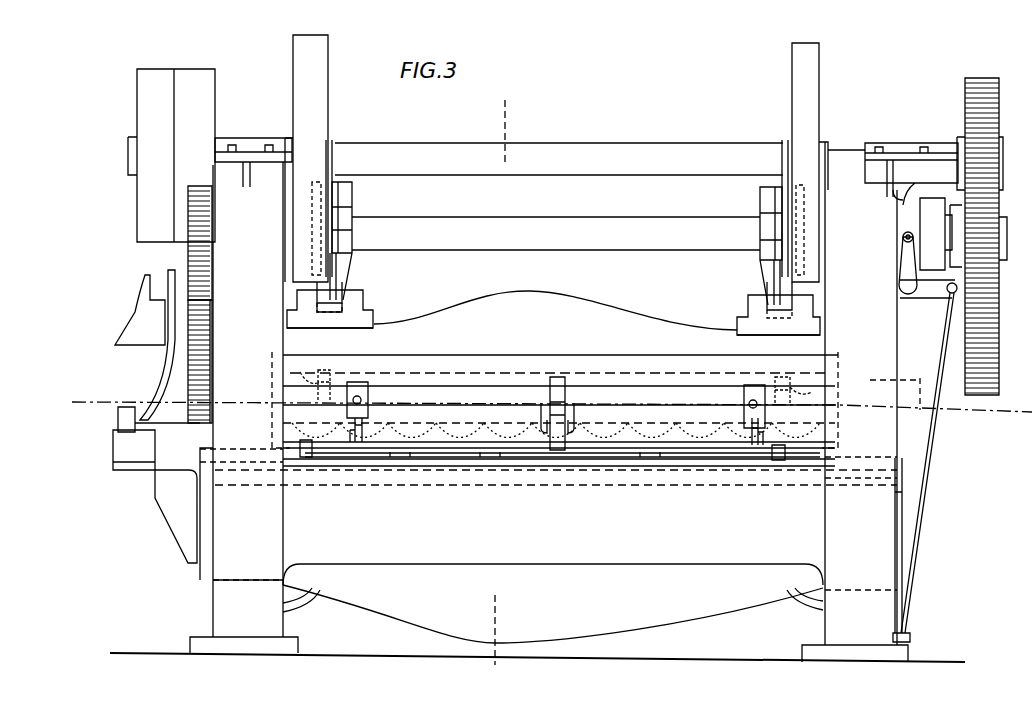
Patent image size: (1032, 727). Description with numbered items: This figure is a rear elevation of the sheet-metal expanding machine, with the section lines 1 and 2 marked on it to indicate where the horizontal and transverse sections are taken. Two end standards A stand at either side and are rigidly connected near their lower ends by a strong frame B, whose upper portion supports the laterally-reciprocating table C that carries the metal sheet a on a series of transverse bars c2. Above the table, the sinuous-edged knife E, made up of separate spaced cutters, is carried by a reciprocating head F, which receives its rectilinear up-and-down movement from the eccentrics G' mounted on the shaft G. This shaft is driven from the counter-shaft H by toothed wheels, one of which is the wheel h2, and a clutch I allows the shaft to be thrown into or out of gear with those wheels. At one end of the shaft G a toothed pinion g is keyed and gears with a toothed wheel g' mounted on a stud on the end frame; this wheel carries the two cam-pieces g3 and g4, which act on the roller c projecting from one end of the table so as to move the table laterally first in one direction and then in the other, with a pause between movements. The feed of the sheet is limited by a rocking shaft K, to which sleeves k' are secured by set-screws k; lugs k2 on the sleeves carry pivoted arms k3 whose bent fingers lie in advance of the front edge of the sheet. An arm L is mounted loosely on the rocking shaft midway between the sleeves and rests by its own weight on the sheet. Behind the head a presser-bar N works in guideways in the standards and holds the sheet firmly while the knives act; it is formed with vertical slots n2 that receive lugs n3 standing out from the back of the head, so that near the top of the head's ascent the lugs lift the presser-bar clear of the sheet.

The end standard A is at (549, 402).
The frame B is at (553, 574).
The laterally-reciprocating table C is at (746, 462).
The sinuous-edged knife E is at (559, 422).
The reciprocating head F is at (555, 314).
The shaft G is at (556, 233).
The eccentric G' is at (554, 250).
The counter-shaft H is at (586, 158).
The clutch I is at (927, 416).
The rocking shaft K is at (559, 396).
The arm L is at (570, 430).
The presser-bar N is at (548, 357).
The metal sheet a is at (440, 460).
The roller c is at (126, 419).
The transverse bar c2 is at (497, 463).
The toothed pinion g is at (212, 243).
The toothed wheel g' is at (216, 361).
The cam-piece g3 is at (140, 290).
The cam-piece g4 is at (156, 366).
The gear wheel h is at (1002, 95).
The toothed wheel h2 is at (1000, 285).
The set-screw k is at (556, 390).
The sleeve k' is at (557, 379).
The lug k2 is at (746, 430).
The arm k3 is at (762, 436).
The vertical slot n2 is at (554, 373).
The lug n3 is at (554, 378).
The section line 1 1 is at (542, 395).
The section line 2 2 is at (498, 390).